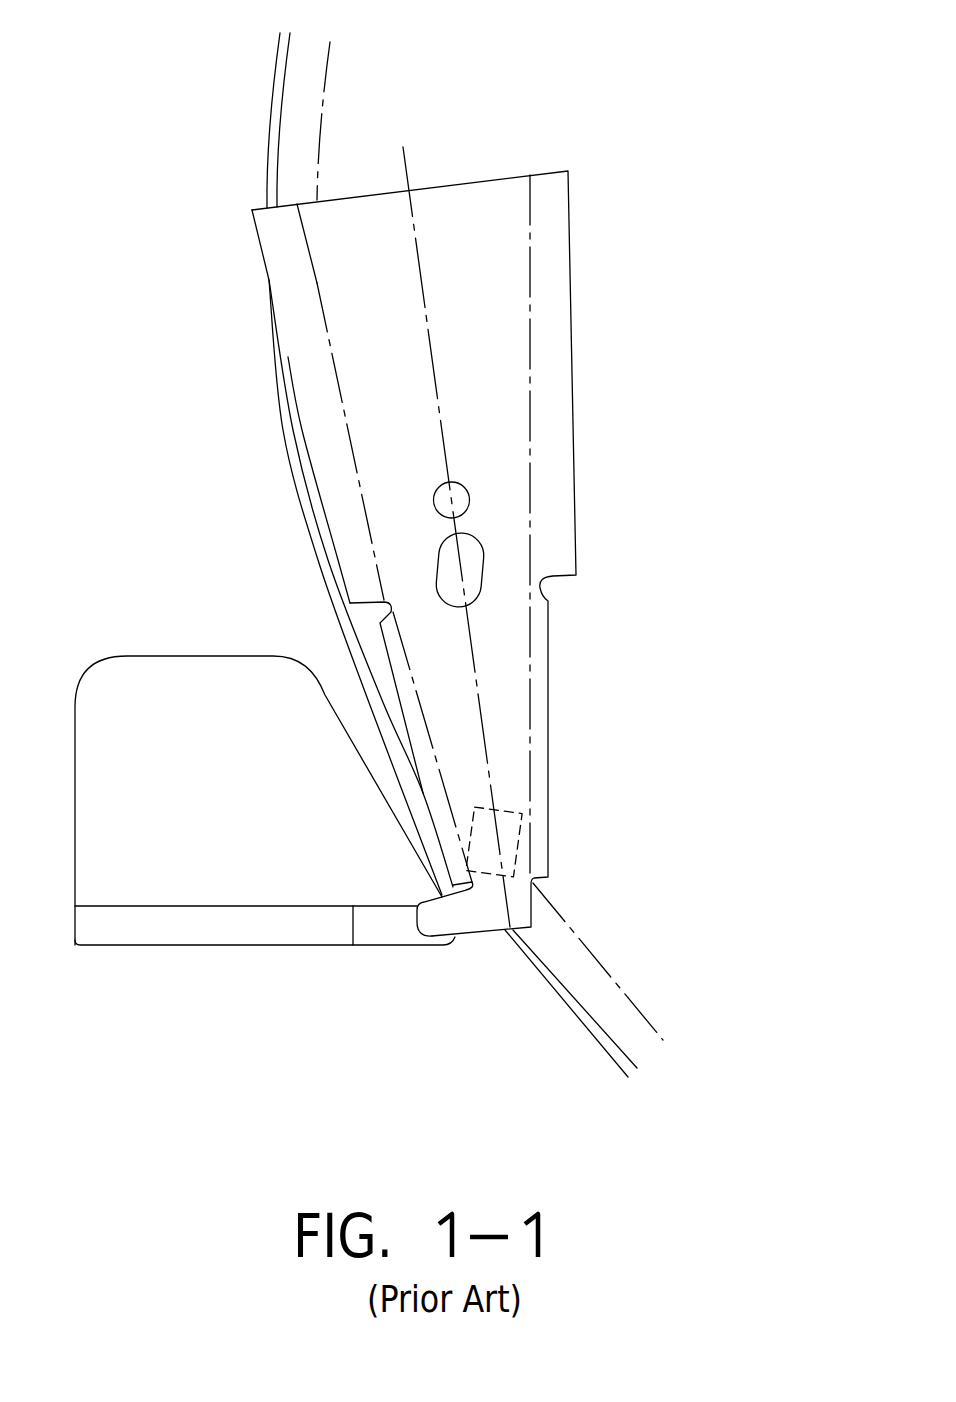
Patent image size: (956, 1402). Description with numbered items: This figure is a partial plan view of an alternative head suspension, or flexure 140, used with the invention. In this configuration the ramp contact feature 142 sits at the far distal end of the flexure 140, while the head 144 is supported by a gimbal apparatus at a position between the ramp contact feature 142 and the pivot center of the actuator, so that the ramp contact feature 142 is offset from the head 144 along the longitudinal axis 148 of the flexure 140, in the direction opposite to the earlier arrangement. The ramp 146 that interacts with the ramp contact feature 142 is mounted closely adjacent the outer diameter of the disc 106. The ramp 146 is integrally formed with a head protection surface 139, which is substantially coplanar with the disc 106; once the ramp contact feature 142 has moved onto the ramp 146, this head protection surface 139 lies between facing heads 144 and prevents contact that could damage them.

The disc 106 is at (292, 470).
The head protection surface 139 is at (180, 683).
The flexure 140 is at (493, 415).
The ramp contact feature 142 is at (462, 913).
The head 144 is at (507, 842).
The ramp 146 is at (215, 923).
The longitudinal axis 148 is at (476, 683).